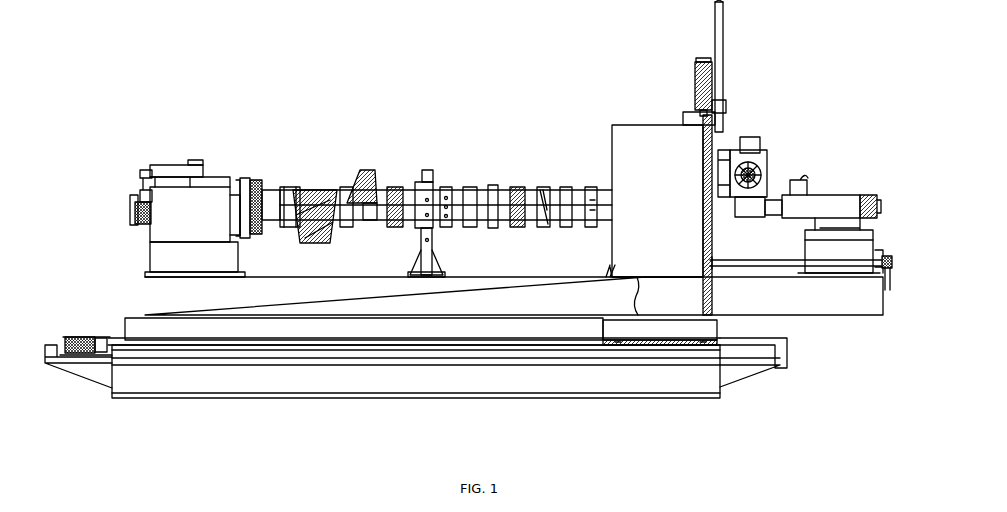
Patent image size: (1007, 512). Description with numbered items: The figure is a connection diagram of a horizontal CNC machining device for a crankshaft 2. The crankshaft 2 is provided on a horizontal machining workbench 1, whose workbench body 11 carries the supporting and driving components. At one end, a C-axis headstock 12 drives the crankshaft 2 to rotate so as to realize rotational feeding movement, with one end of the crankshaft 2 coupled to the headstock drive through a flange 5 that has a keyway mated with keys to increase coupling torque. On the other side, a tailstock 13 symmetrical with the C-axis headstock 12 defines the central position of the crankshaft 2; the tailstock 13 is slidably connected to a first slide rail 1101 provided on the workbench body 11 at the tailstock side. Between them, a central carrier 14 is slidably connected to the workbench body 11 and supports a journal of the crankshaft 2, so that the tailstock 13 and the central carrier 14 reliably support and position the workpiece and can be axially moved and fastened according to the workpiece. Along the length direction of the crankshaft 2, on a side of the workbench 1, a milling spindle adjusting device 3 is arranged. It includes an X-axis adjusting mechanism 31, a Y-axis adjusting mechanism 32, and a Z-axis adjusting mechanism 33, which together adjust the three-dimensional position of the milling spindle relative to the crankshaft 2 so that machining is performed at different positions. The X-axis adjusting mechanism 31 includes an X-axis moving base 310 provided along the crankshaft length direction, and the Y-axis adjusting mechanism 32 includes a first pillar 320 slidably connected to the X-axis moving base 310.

The horizontal machining workbench 1 is at (143, 292).
The crankshaft 2 is at (340, 185).
The milling spindle adjusting device 3 is at (588, 298).
The flange 5 is at (252, 182).
The workbench body 11 is at (145, 383).
The C-axis headstock 12 is at (163, 228).
The tailstock 13 is at (818, 200).
The central carrier 14 is at (432, 170).
The X-axis adjusting mechanism 31 is at (90, 337).
The Y-axis adjusting mechanism 32 is at (700, 97).
The Z-axis adjusting mechanism 33 is at (757, 168).
The X-axis moving base 310 is at (690, 325).
The first pillar 320 is at (632, 180).
The first slide rail 1101 is at (883, 260).